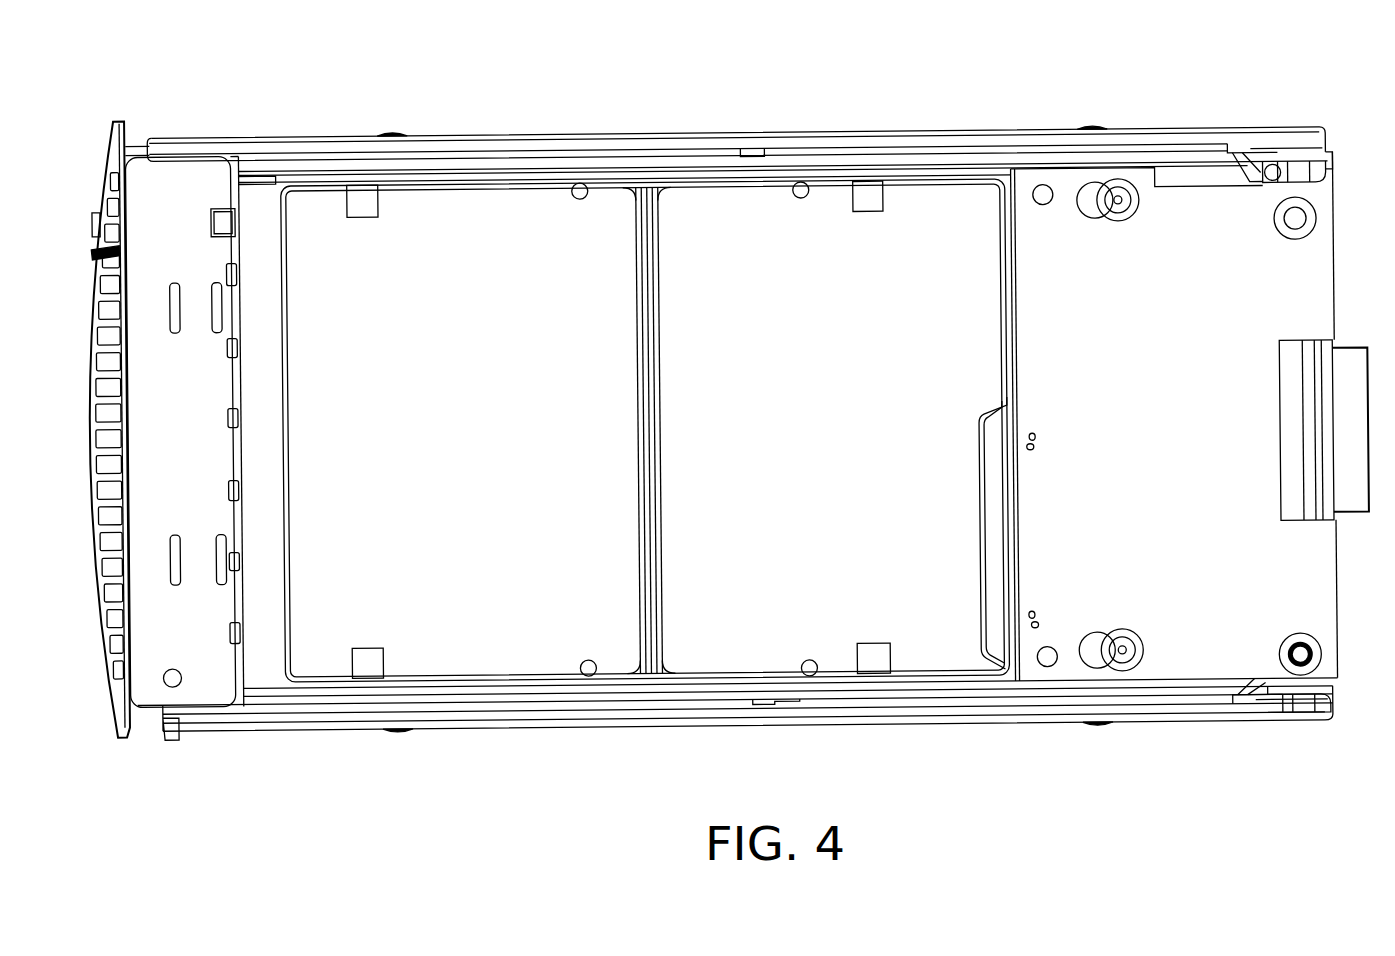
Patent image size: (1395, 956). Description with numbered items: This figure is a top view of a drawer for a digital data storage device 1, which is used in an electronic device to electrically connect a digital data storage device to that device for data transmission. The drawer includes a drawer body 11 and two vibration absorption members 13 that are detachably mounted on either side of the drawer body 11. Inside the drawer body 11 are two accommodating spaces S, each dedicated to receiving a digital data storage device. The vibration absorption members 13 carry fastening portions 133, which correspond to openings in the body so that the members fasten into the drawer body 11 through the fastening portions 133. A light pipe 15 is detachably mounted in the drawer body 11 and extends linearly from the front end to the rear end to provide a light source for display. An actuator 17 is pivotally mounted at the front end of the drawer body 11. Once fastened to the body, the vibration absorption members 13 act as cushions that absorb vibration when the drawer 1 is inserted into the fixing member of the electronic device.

The drawer for a digital data storage device 1 is at (725, 38).
The drawer body 11 is at (1343, 610).
The vibration absorption member 13 is at (1243, 145).
The fastening portion 133 is at (1250, 153).
The light pipe 15 is at (1328, 175).
The actuator 17 is at (90, 482).
The accommodating space S is at (513, 243).